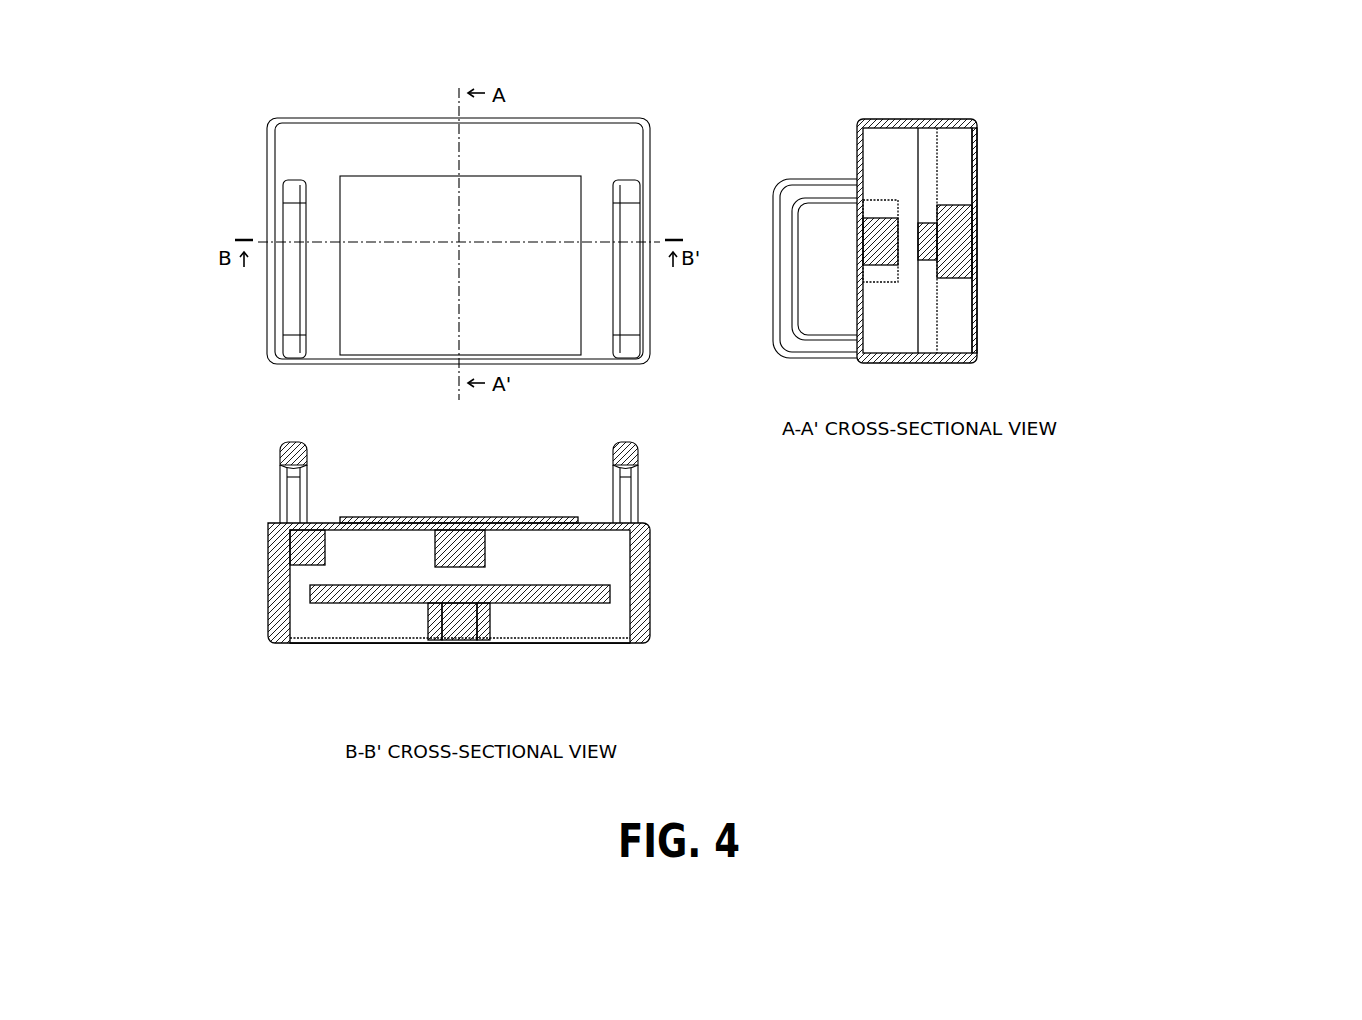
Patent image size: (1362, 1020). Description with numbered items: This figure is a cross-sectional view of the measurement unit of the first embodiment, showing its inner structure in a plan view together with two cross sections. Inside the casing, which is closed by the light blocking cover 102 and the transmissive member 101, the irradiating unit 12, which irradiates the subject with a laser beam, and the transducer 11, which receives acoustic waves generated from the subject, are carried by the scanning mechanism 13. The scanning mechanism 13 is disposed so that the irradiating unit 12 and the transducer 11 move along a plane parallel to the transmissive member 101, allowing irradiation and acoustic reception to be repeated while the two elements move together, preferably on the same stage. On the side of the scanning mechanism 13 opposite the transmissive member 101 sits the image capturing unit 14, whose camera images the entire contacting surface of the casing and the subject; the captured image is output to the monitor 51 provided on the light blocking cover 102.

The transducer 11 is at (453, 610).
The irradiating unit 12 is at (953, 253).
The scanning mechanism 13 is at (927, 300).
The image capturing unit 14 is at (448, 552).
The monitor 51 is at (572, 518).
The transmissive member 101 is at (973, 183).
The light blocking cover 102 is at (947, 118).